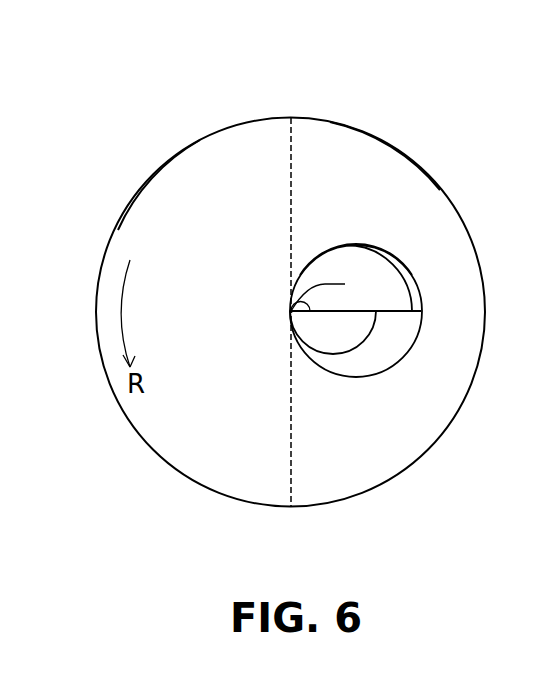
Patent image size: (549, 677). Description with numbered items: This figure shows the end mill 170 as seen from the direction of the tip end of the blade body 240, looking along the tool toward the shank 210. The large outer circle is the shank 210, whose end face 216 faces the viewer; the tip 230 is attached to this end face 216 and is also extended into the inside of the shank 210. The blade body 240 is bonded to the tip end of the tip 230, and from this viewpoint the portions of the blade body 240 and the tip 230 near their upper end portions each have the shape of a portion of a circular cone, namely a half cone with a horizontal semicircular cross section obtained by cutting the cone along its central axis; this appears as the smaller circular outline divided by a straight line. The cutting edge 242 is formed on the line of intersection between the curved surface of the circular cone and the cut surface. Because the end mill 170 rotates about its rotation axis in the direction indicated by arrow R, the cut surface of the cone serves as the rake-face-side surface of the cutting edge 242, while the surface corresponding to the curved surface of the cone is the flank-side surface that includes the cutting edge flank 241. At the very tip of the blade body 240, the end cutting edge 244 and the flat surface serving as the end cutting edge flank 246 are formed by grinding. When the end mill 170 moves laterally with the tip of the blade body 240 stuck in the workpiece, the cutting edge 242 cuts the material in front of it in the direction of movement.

The end mill 170 is at (45, 42).
The shank 210 is at (168, 160).
The end face 216 is at (355, 152).
The tip 230 is at (373, 360).
The blade body 240 is at (330, 237).
The cutting edge flank 241 is at (350, 270).
The cutting edge 242 is at (291, 311).
The end cutting edge 244 is at (291, 315).
The end cutting edge flank 246 is at (345, 284).